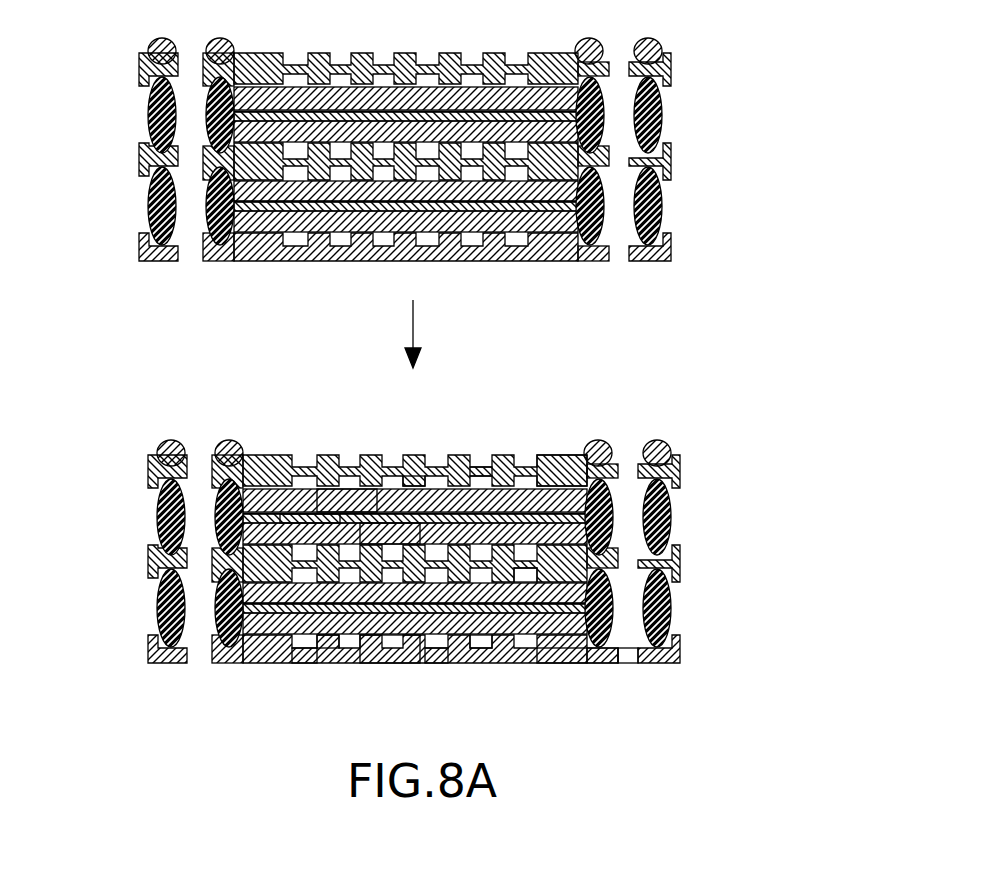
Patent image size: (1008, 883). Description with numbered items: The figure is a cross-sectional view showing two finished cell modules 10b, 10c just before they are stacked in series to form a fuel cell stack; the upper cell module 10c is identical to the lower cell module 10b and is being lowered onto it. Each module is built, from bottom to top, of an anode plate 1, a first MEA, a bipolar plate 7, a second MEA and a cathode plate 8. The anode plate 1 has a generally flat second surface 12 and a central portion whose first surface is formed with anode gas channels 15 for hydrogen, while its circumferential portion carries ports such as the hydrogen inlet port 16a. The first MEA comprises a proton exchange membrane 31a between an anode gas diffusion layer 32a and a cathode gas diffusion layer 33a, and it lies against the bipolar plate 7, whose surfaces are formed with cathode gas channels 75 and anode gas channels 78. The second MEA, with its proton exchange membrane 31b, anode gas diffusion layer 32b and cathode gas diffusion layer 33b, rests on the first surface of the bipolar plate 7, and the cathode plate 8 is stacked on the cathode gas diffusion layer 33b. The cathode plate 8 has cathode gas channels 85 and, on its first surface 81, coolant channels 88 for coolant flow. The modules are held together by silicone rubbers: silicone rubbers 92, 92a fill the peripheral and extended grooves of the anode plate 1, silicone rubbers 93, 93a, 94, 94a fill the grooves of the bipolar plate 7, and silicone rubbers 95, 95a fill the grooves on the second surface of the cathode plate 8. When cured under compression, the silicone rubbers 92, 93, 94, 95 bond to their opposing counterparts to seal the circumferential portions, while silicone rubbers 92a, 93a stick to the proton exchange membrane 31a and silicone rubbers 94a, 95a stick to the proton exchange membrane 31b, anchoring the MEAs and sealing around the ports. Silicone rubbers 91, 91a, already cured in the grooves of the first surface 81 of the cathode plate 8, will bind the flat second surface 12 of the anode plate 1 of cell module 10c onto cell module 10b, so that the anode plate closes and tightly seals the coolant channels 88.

The anode plate 1 is at (680, 662).
The bipolar plate 7 is at (676, 565).
The cathode plate 8 is at (680, 460).
The cell module 10b is at (128, 455).
The cell module 10c is at (118, 53).
The second surface 12 is at (573, 665).
The anode gas channels 15 is at (483, 643).
The hydrogen inlet port 16a is at (630, 660).
The proton exchange membrane 31a is at (388, 652).
The proton exchange membrane 31b is at (346, 518).
The anode gas diffusion layer 32a is at (303, 663).
The anode gas diffusion layer 32b is at (305, 522).
The cathode gas diffusion layer 33a is at (343, 657).
The cathode gas diffusion layer 33b is at (390, 530).
The cathode gas channels 75 is at (440, 657).
The anode gas channels 78 is at (524, 566).
The first surface 81 is at (560, 455).
The cathode gas channels 85 is at (420, 486).
The coolant channels 88 is at (476, 468).
The silicone rubber 91 is at (657, 440).
The silicone rubber 91a is at (598, 440).
The silicone rubber 92 is at (676, 646).
The silicone rubber 92a is at (676, 625).
The silicone rubber 93 is at (676, 592).
The silicone rubber 93a is at (676, 605).
The silicone rubber 94 is at (676, 540).
The silicone rubber 94a is at (676, 518).
The silicone rubber 95 is at (680, 484).
The silicone rubber 95a is at (676, 505).